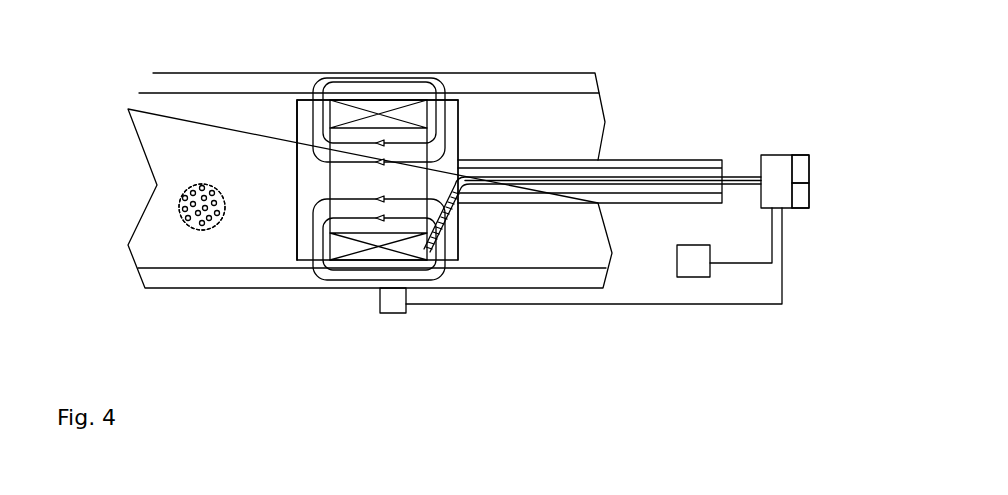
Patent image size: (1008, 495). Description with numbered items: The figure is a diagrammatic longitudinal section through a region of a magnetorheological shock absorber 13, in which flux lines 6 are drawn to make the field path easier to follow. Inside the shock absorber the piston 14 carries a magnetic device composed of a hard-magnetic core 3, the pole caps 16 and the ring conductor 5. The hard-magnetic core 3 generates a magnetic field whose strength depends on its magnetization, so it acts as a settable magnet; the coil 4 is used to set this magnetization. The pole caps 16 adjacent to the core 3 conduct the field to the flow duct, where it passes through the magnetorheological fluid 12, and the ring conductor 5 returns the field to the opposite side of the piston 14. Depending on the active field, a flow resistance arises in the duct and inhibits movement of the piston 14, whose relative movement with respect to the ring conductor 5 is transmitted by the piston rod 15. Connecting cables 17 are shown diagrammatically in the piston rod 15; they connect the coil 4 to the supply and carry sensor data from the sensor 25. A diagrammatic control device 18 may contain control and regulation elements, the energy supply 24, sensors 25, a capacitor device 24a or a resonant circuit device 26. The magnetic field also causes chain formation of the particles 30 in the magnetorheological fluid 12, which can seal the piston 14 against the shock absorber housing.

The hard-magnetic core 3 is at (348, 175).
The coil 4 is at (375, 107).
The ring conductor 5 is at (495, 85).
The flux lines 6 is at (433, 80).
The magnetorheological fluid 12 is at (183, 193).
The magnetorheological shock absorber 13 is at (565, 83).
The piston 14 is at (452, 140).
The piston rod 15 is at (645, 162).
The pole caps 16 is at (305, 107).
The connecting cables 17 is at (745, 177).
The control device 18 is at (785, 160).
The energy supply 24 is at (810, 170).
The capacitor device 24a is at (800, 200).
The sensor 25 is at (395, 308).
The resonant circuit device 26 is at (695, 277).
The particles 30 is at (197, 185).